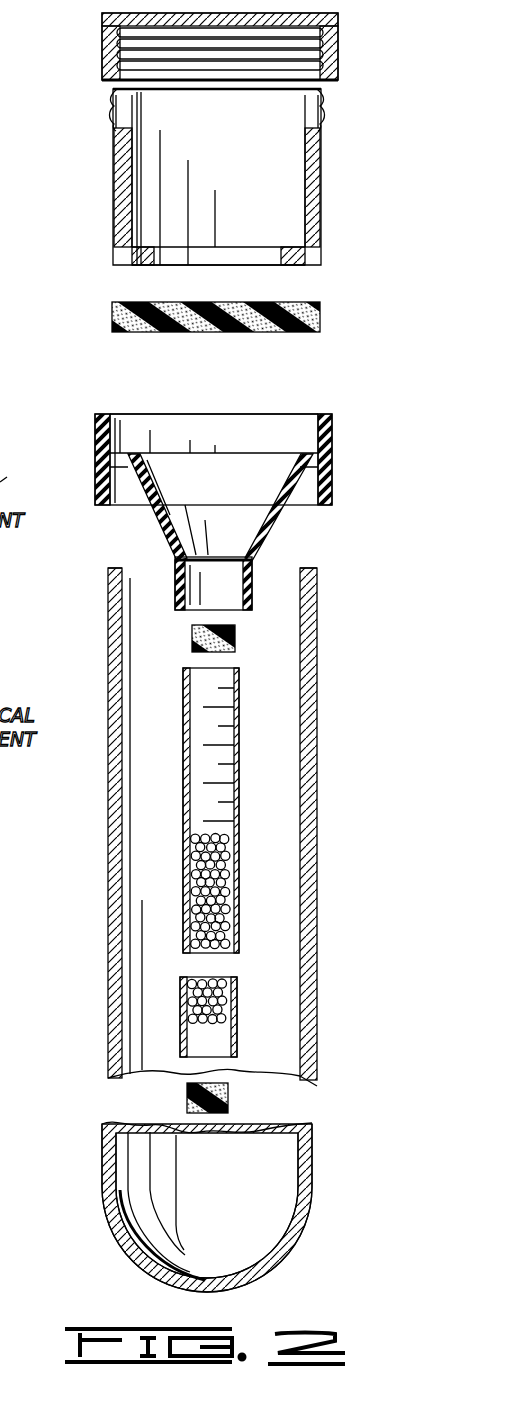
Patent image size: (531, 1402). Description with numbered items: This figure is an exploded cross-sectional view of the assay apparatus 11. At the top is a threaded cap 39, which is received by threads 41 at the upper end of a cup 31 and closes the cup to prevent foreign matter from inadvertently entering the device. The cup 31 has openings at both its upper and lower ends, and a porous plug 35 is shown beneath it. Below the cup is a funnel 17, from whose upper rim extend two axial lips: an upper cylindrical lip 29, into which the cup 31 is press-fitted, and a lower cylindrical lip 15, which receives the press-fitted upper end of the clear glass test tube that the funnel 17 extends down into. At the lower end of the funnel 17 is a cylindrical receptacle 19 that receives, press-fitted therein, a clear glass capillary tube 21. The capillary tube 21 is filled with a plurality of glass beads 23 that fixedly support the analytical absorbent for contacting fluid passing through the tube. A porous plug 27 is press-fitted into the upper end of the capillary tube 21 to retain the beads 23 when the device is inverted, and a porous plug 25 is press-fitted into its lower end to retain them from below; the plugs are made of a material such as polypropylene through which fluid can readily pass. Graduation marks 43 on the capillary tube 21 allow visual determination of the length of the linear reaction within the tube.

The apparatus 11 is at (354, 254).
The lower cylindrical lip 15 is at (334, 496).
The funnel 17 is at (162, 531).
The cylindrical receptacle 19 is at (252, 580).
The capillary tube 21 is at (234, 931).
The glass beads 23 is at (213, 868).
The plug 25 is at (230, 1103).
The plug 27 is at (236, 640).
The upper cylindrical lip 29 is at (336, 429).
The cup 31 is at (114, 208).
The plug 35 is at (322, 314).
The threaded cap 39 is at (112, 17).
The threads 41 is at (114, 128).
The graduation marks 43 is at (222, 741).